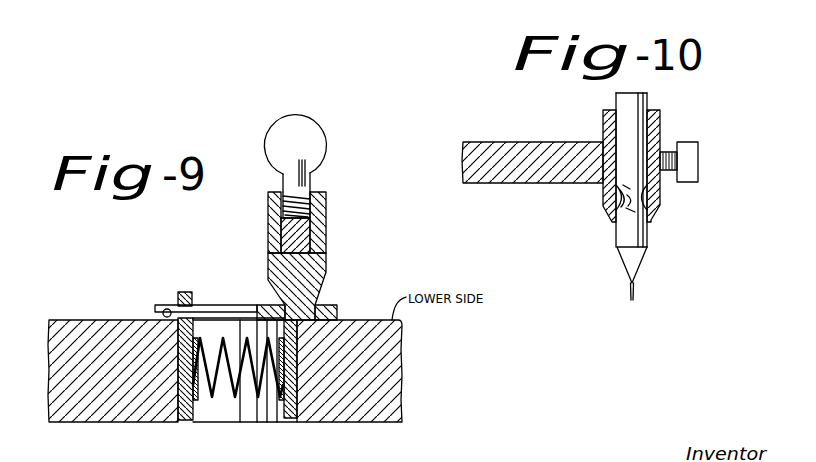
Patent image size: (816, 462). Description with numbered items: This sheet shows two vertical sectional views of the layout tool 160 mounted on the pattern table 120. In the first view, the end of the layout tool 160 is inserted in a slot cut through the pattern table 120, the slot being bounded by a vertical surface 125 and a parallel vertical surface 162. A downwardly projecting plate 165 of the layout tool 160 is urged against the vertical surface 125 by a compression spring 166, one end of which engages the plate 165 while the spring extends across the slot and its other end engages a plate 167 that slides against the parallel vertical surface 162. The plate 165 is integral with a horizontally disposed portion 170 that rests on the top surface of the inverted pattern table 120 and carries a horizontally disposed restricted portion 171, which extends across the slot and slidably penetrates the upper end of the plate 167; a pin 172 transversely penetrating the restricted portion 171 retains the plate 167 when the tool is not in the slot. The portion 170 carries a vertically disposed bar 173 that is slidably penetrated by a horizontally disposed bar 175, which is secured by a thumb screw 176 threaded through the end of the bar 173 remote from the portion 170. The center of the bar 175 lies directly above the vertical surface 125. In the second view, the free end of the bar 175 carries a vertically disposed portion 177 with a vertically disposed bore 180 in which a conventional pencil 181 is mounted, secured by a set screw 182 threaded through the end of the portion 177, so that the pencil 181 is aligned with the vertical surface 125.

In FIG. 9, the pattern table 120 is at (383, 420).
In FIG. 9, the vertical surface 125 is at (299, 407).
In FIG. 9, the layout tool 160 is at (327, 240).
In FIG. 10, the layout tool 160 is at (609, 130).
In FIG. 9, the parallel vertical surface 162 is at (177, 408).
In FIG. 9, the plate 165 is at (298, 418).
In FIG. 9, the compression spring 166 is at (224, 388).
In FIG. 9, the plate 167 is at (190, 420).
In FIG. 9, the horizontally disposed portion 170 is at (337, 312).
In FIG. 9, the restricted portion 171 is at (207, 306).
In FIG. 9, the pin 172 is at (168, 305).
In FIG. 9, the bar 173 is at (326, 262).
In FIG. 9, the horizontally disposed bar 175 is at (312, 222).
In FIG. 10, the horizontally disposed bar 175 is at (491, 142).
In FIG. 9, the thumb screw 176 is at (321, 144).
In FIG. 10, the vertically disposed portion 177 is at (661, 128).
In FIG. 10, the bore 180 is at (653, 207).
In FIG. 10, the pencil 181 is at (648, 248).
In FIG. 10, the set screw 182 is at (698, 150).